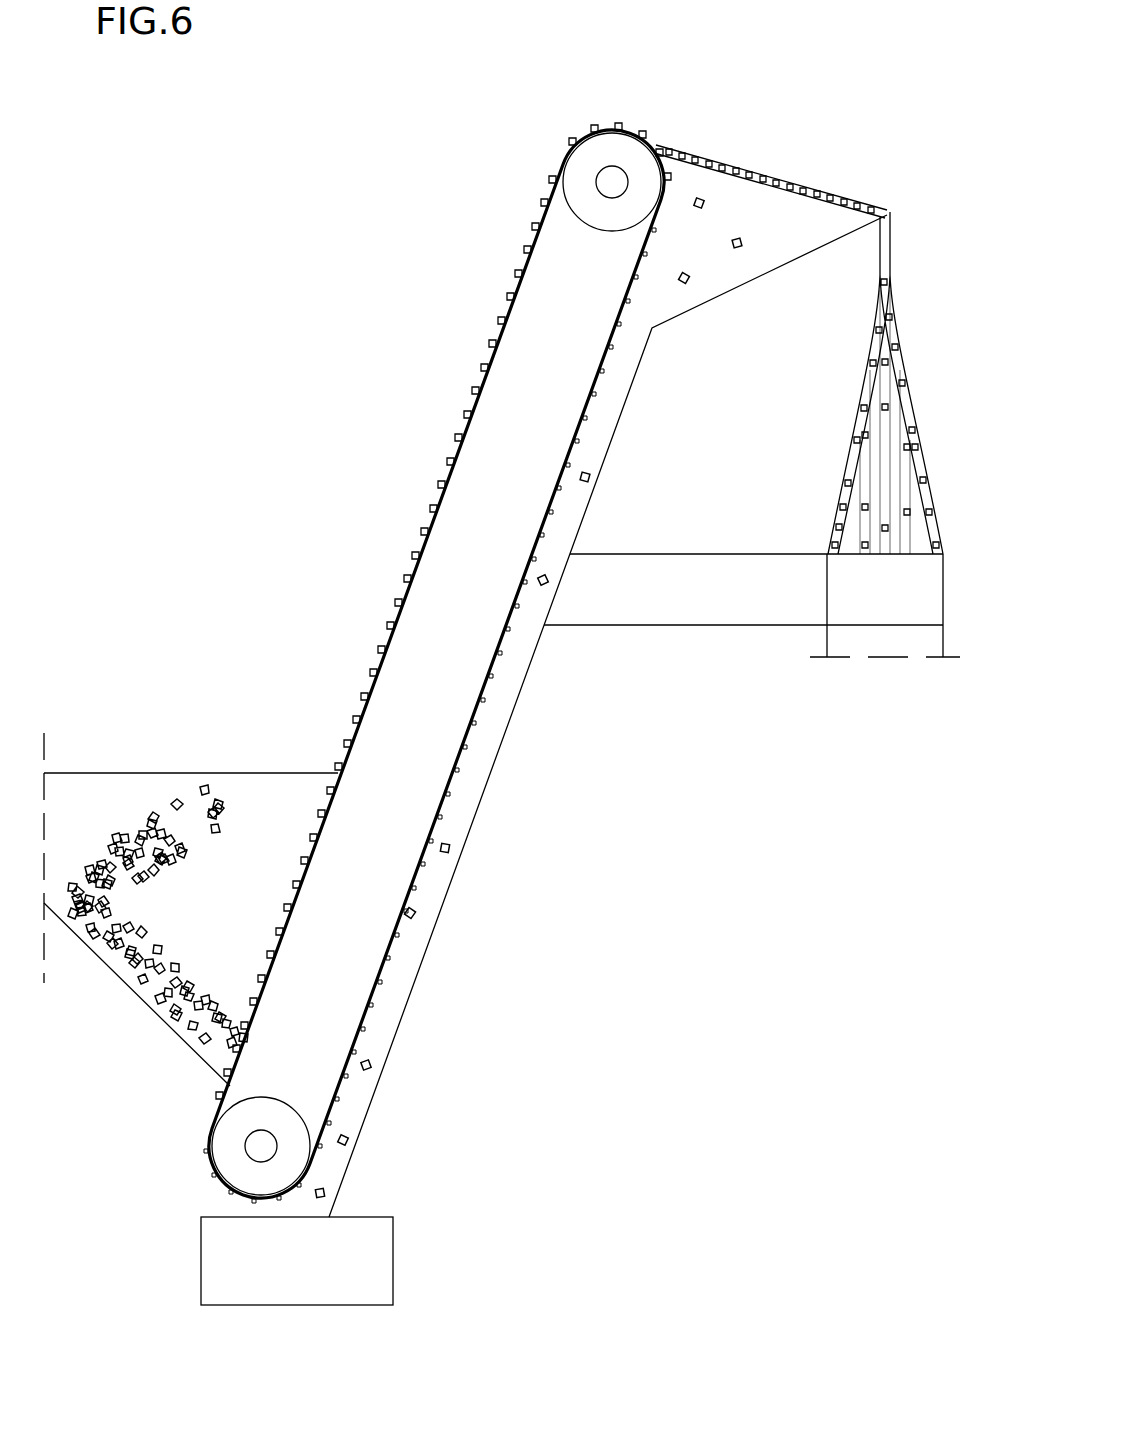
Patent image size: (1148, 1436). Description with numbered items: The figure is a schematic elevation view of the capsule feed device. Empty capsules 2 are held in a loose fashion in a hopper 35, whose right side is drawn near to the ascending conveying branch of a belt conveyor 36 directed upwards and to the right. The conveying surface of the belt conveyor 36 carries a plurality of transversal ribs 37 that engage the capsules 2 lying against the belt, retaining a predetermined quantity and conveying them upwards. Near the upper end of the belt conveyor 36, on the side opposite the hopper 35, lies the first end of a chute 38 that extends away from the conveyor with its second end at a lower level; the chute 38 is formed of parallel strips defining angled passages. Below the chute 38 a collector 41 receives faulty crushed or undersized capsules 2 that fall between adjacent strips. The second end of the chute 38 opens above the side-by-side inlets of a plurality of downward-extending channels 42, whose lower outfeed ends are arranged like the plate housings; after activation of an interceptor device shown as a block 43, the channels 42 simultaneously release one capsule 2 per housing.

The capsules 2 is at (737, 243).
The hopper 35 is at (255, 835).
The belt conveyor 36 is at (500, 330).
The transversal ribs 37 is at (397, 610).
The chute 38 is at (790, 183).
The collector 41 is at (649, 313).
The channels 42 is at (863, 467).
The block 43 is at (846, 648).